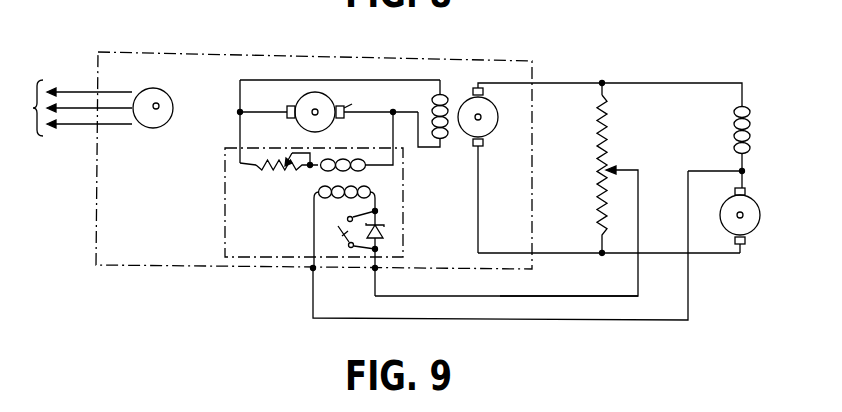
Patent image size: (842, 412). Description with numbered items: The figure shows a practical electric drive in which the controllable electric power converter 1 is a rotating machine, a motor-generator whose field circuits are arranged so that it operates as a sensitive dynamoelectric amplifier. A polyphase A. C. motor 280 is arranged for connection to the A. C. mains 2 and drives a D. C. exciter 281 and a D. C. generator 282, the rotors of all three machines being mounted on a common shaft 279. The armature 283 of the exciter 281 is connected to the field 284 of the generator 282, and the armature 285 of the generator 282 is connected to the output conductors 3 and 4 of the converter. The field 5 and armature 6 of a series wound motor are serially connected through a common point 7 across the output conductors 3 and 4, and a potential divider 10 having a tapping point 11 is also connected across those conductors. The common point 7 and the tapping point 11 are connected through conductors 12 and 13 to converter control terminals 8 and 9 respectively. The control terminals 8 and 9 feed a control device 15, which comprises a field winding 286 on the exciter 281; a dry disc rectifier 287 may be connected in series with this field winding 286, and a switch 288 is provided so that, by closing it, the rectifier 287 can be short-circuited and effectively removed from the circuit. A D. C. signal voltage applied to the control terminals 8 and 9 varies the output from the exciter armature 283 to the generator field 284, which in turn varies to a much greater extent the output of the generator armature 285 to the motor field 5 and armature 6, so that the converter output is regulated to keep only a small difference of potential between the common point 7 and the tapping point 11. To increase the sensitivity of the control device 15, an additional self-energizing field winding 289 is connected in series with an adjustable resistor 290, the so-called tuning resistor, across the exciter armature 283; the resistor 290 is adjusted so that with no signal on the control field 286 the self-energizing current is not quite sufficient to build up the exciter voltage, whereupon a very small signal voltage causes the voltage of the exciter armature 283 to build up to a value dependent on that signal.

The controllable electric power converter 1 is at (222, 55).
The A. C. mains 2 is at (75, 108).
The output conductor 3 is at (580, 83).
The output conductor 4 is at (566, 256).
The field of series wound motor 5 is at (751, 122).
The armature of series wound motor 6 is at (761, 215).
The common point 7 is at (745, 171).
The converter control terminal 8 is at (311, 269).
The converter control terminal 9 is at (378, 270).
The potential divider 10 is at (598, 157).
The tapping point 11 is at (614, 165).
The conductor 12 is at (612, 322).
The conductor 13 is at (612, 296).
The control device 15 is at (225, 190).
The common shaft 279 is at (158, 104).
The polyphase A. C. motor 280 is at (170, 75).
The D. C. exciter 281 is at (330, 75).
The D. C. generator 282 is at (475, 78).
The armature of exciter 283 is at (363, 98).
The field of generator 284 is at (432, 101).
The armature of generator 285 is at (486, 138).
The field winding 286 is at (346, 227).
The dry disc rectifier 287 is at (386, 233).
The switch 288 is at (348, 241).
The self-energizing field winding 289 is at (349, 159).
The adjustable resistor 290 is at (284, 173).